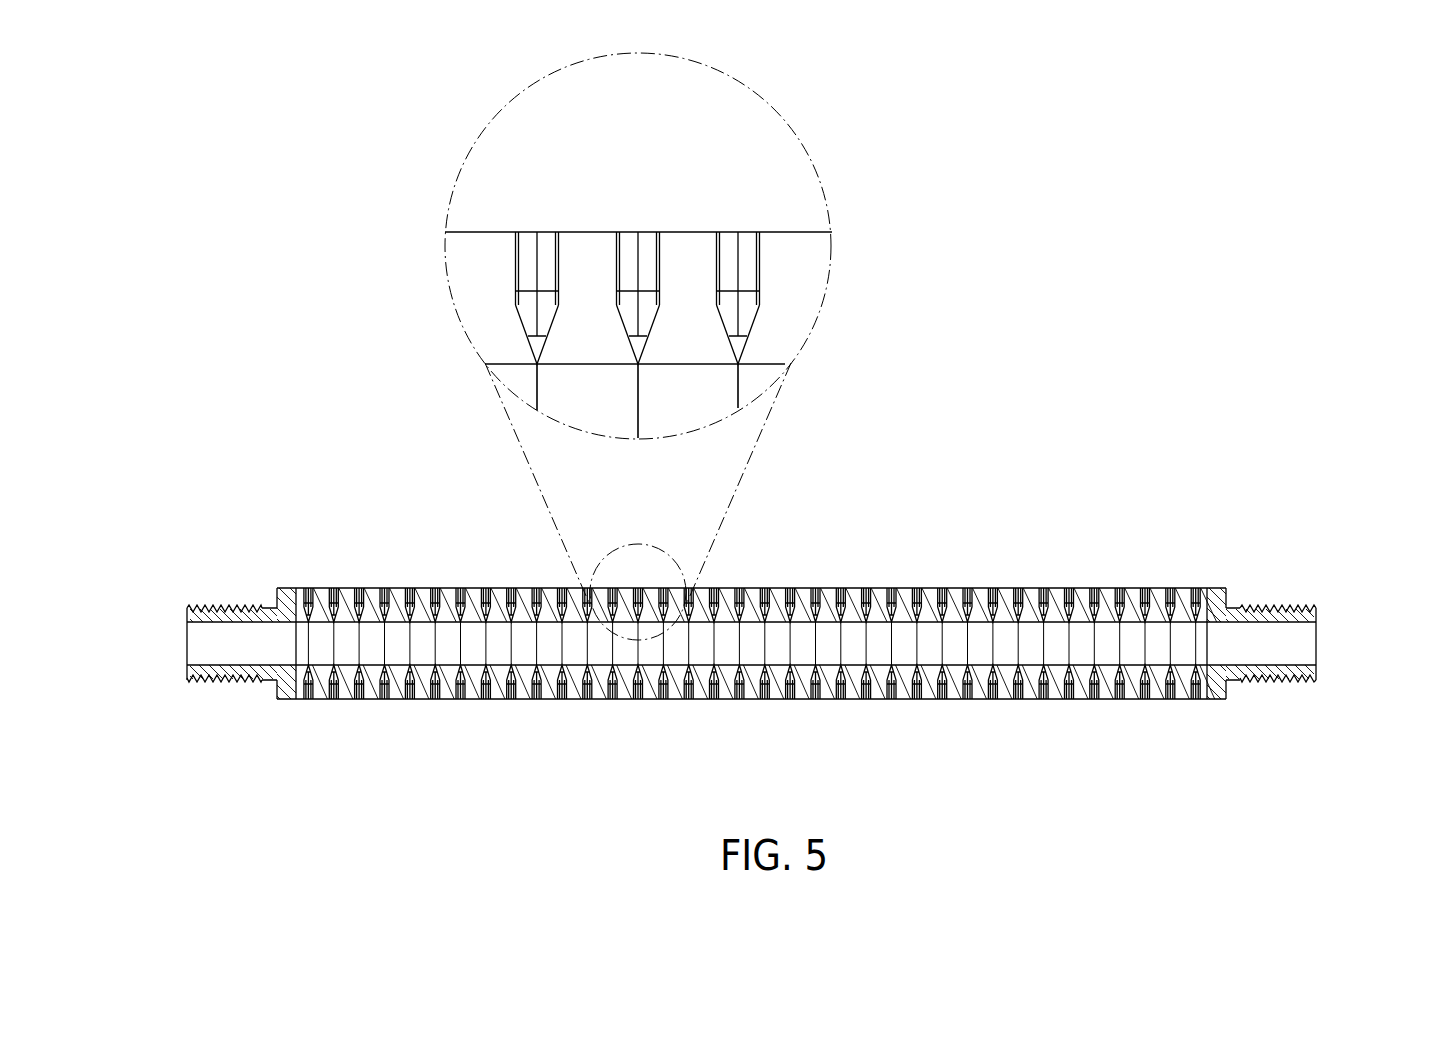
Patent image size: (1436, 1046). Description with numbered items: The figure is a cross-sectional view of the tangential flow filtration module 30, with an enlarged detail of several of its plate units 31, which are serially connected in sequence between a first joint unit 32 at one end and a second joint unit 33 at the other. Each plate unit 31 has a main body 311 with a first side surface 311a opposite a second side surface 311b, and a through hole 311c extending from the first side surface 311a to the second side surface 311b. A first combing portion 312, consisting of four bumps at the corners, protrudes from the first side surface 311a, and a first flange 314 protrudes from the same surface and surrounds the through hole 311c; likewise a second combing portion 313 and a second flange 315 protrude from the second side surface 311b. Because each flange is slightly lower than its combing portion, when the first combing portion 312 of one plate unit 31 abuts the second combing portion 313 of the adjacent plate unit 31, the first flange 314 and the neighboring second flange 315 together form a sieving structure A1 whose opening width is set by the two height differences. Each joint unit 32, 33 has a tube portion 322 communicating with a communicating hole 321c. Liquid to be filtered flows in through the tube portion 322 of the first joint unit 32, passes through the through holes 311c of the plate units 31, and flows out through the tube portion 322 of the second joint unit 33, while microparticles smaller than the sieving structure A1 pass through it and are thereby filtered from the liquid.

The tangential flow filtration module 30 is at (192, 378).
The plate unit 31 is at (577, 214).
The main body 311 is at (590, 258).
The first side surface 311a is at (513, 277).
The second side surface 311b is at (760, 258).
The through hole 311c is at (702, 402).
The first combing portion 312 is at (537, 258).
The second combing portion 313 is at (747, 312).
The first flange 314 is at (543, 335).
The second flange 315 is at (513, 323).
The sieving structure A1 is at (640, 347).
The first joint unit 32 is at (285, 688).
The second joint unit 33 is at (1217, 687).
The communicating hole 321c is at (205, 644).
The tube portion 322 is at (233, 610).